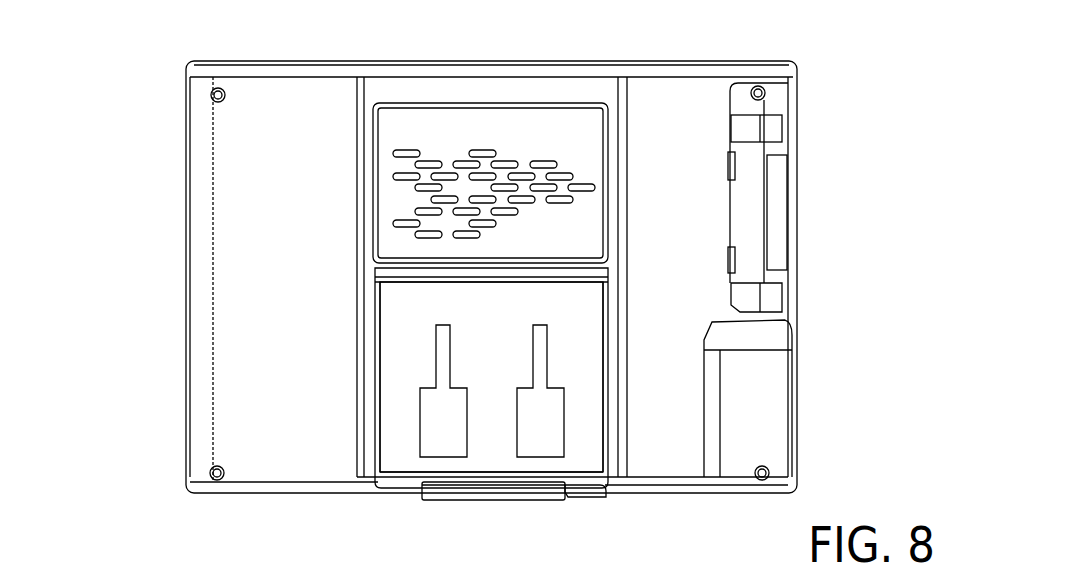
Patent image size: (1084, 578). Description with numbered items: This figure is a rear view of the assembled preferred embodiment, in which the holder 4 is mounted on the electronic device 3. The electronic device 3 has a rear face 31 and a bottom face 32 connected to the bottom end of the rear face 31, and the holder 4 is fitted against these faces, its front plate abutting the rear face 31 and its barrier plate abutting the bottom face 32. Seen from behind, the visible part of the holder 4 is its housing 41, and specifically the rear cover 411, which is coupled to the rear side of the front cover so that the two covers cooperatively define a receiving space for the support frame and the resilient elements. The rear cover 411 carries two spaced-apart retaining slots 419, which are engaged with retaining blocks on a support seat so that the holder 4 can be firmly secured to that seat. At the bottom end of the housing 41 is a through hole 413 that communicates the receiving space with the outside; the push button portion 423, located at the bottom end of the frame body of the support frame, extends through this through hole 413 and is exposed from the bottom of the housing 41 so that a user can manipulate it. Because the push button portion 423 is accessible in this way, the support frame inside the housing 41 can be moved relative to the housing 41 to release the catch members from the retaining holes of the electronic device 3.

The electronic device 3 is at (160, 72).
The rear face 31 is at (253, 270).
The bottom face 32 is at (290, 495).
The holder 4 is at (614, 295).
The housing 41 is at (614, 316).
The rear cover 411 is at (578, 363).
The through hole 413 is at (567, 486).
The retaining slots 419 is at (415, 443).
The push button portion 423 is at (492, 488).